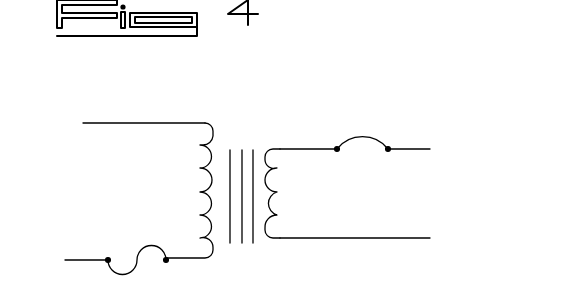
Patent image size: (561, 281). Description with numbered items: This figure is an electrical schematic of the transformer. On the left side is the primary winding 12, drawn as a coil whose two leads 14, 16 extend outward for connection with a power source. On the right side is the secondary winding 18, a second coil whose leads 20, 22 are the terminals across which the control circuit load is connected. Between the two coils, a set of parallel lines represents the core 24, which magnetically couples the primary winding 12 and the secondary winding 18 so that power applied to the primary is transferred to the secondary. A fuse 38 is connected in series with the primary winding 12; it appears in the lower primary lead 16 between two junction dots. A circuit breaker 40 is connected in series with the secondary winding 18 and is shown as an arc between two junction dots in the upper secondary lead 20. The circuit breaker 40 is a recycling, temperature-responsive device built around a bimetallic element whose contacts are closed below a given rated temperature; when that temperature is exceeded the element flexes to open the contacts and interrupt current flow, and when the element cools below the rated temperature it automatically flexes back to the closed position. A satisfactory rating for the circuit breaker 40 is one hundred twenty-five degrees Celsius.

The primary winding 12 is at (198, 146).
The lead 14 is at (105, 123).
The lead 16 is at (80, 260).
The secondary winding 18 is at (282, 167).
The lead 20 is at (402, 149).
The lead 22 is at (388, 238).
The core 24 is at (256, 150).
The fuse 38 is at (145, 246).
The circuit breaker 40 is at (349, 135).